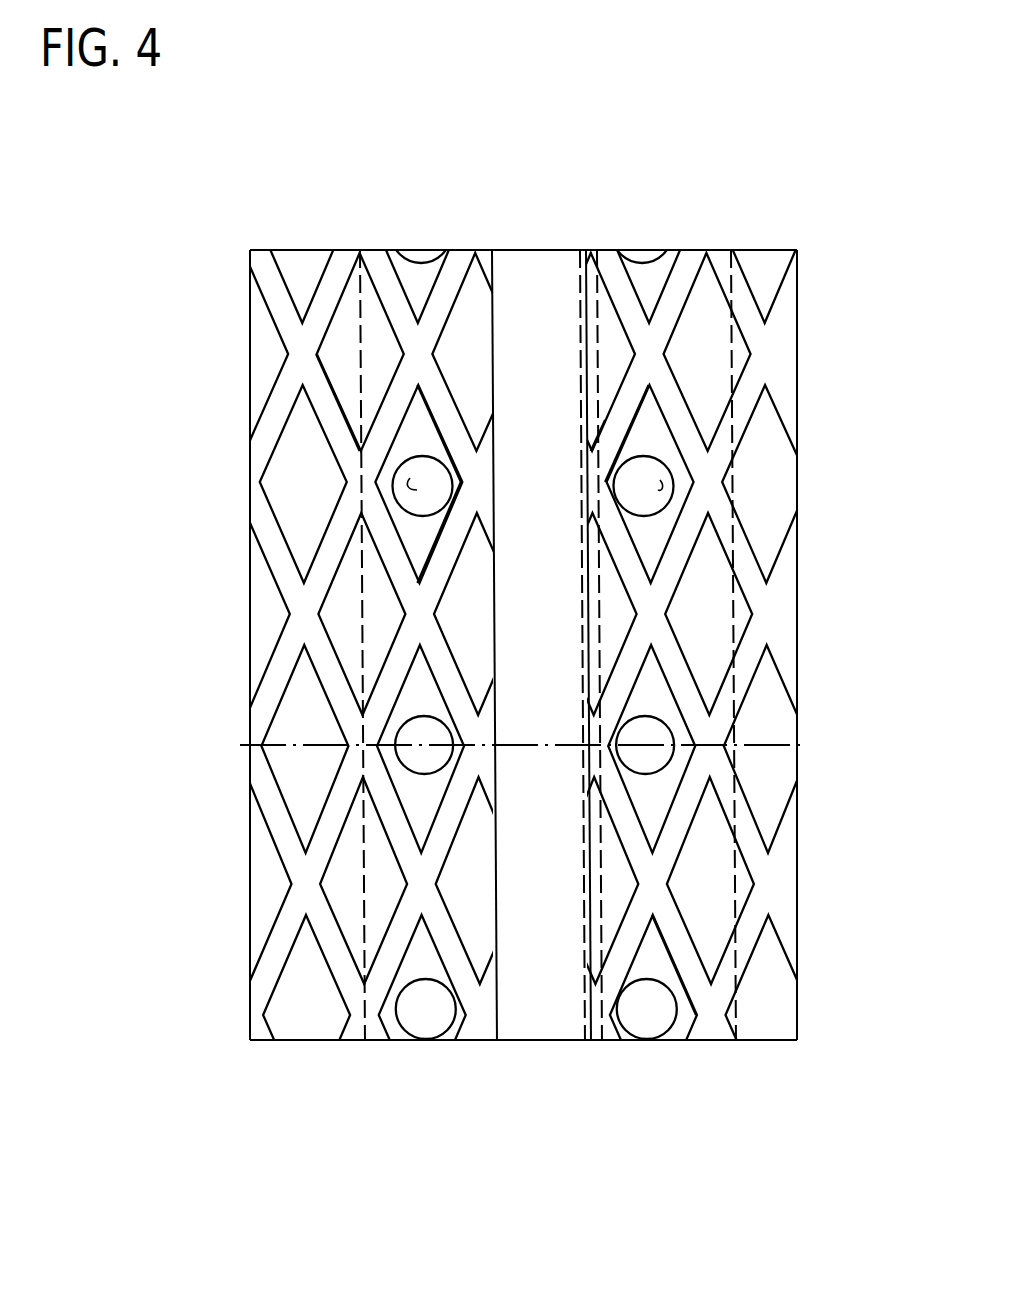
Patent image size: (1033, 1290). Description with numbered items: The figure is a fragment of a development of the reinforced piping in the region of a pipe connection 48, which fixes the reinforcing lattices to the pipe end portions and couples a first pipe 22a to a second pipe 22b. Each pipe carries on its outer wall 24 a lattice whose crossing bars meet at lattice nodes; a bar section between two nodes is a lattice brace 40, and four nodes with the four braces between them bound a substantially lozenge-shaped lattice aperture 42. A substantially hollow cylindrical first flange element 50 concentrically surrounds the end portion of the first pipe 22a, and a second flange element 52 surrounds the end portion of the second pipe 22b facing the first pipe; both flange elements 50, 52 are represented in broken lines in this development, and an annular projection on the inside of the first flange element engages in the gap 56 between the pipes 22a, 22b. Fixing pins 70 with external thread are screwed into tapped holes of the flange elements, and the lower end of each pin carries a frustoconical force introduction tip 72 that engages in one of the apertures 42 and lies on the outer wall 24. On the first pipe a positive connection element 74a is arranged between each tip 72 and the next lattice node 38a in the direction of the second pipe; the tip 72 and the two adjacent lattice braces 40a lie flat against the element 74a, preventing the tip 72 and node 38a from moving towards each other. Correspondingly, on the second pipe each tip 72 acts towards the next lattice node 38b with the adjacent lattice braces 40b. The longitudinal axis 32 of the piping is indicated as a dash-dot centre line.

The first pipe 22a is at (478, 303).
The second pipe 22b is at (612, 322).
The outer wall 24 is at (302, 993).
The longitudinal axis 32 is at (780, 736).
The lattice node 38a is at (440, 410).
The lattice node 38b is at (598, 450).
The lattice brace 40 is at (673, 983).
The lattice braces 40a is at (442, 410).
The lattice braces 40b is at (622, 413).
The lattice aperture 42 is at (413, 530).
The pipe connection 48 is at (523, 179).
The first flange element 50 is at (533, 303).
The second flange element 52 is at (710, 313).
The gap 56 is at (518, 1008).
The fixing pin 70 is at (417, 472).
The force introduction tip 72 is at (417, 490).
The positive connection element 74a is at (458, 505).